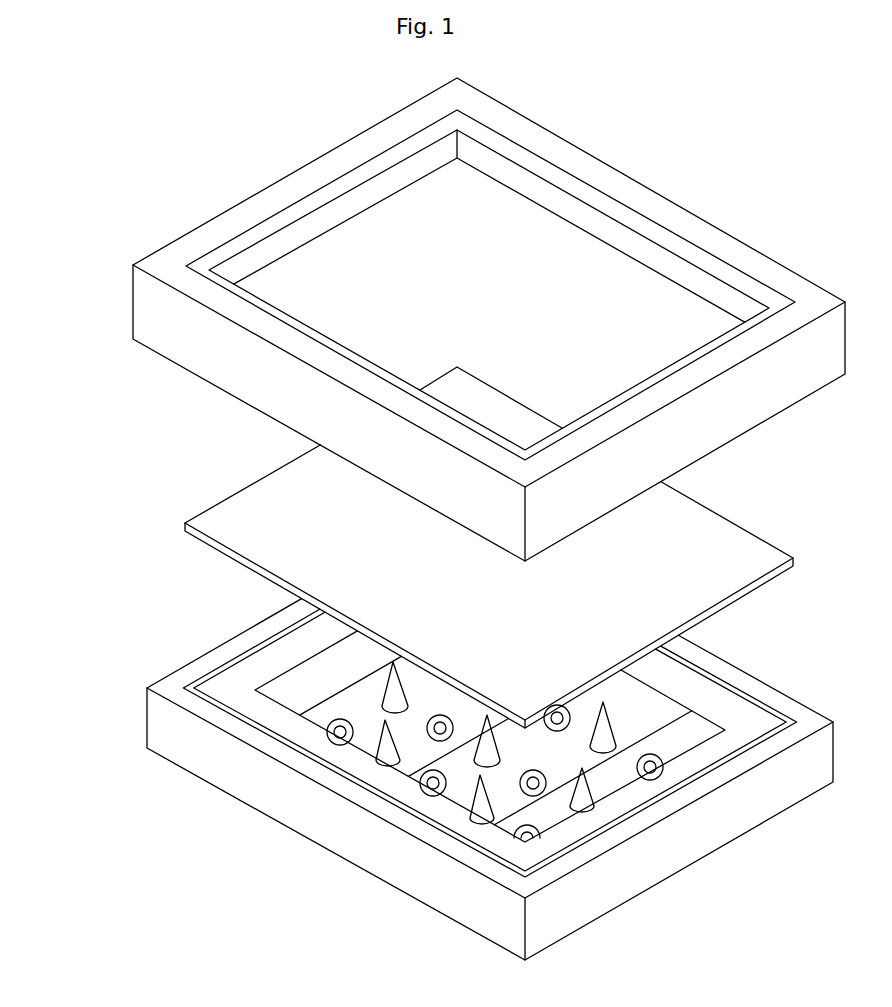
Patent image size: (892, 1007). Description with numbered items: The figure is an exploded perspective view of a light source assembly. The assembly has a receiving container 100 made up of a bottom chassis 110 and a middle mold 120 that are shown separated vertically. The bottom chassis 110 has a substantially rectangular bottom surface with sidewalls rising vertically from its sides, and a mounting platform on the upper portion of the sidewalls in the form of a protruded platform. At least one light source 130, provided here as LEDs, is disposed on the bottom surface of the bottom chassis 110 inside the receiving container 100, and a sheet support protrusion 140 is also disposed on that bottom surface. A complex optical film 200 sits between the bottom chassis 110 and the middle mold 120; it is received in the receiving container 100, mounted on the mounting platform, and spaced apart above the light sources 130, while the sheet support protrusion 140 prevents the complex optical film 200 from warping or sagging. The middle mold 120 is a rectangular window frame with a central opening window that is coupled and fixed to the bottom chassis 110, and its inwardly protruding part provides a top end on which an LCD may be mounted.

The receiving container 100 is at (65, 452).
The bottom chassis 110 is at (157, 700).
The middle mold 120 is at (200, 348).
The light source 130 is at (528, 786).
The sheet support protrusion 140 is at (632, 735).
The complex optical film 200 is at (725, 545).